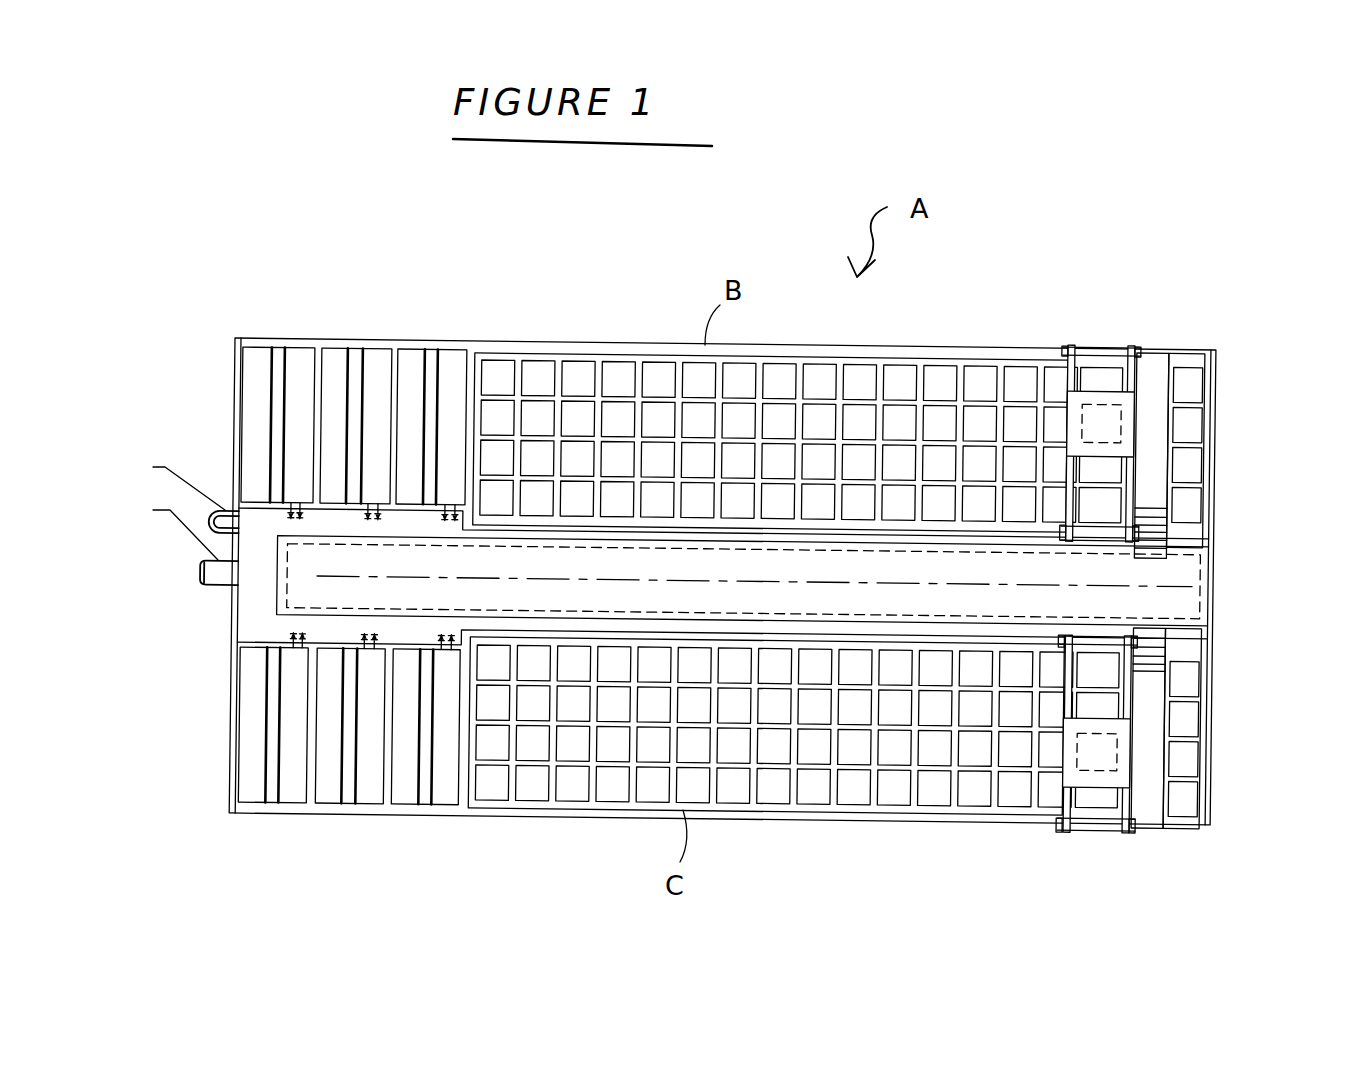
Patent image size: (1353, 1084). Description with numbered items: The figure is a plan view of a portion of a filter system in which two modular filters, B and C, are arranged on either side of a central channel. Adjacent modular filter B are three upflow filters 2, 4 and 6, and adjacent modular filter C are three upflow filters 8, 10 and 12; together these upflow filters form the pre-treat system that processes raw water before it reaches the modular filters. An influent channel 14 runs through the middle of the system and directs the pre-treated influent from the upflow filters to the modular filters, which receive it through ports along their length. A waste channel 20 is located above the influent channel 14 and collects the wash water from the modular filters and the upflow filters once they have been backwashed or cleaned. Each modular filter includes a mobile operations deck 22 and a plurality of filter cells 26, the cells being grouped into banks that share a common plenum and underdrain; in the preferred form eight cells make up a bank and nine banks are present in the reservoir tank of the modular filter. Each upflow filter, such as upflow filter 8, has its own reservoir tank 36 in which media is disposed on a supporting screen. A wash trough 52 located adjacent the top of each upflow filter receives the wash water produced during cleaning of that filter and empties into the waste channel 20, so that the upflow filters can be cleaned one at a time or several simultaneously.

The upflow filter 2 is at (432, 340).
The upflow filter 4 is at (382, 340).
The upflow filter 6 is at (297, 338).
The upflow filter 8 is at (433, 812).
The upflow filter 10 is at (340, 812).
The upflow filter 12 is at (248, 813).
The influent channel 14 is at (304, 616).
The waste channel 20 is at (237, 627).
The mobile operations deck 22 is at (1105, 410).
The filter cells 26 is at (490, 800).
The reservoir tank 36 is at (400, 808).
The wash trough 52 is at (268, 773).